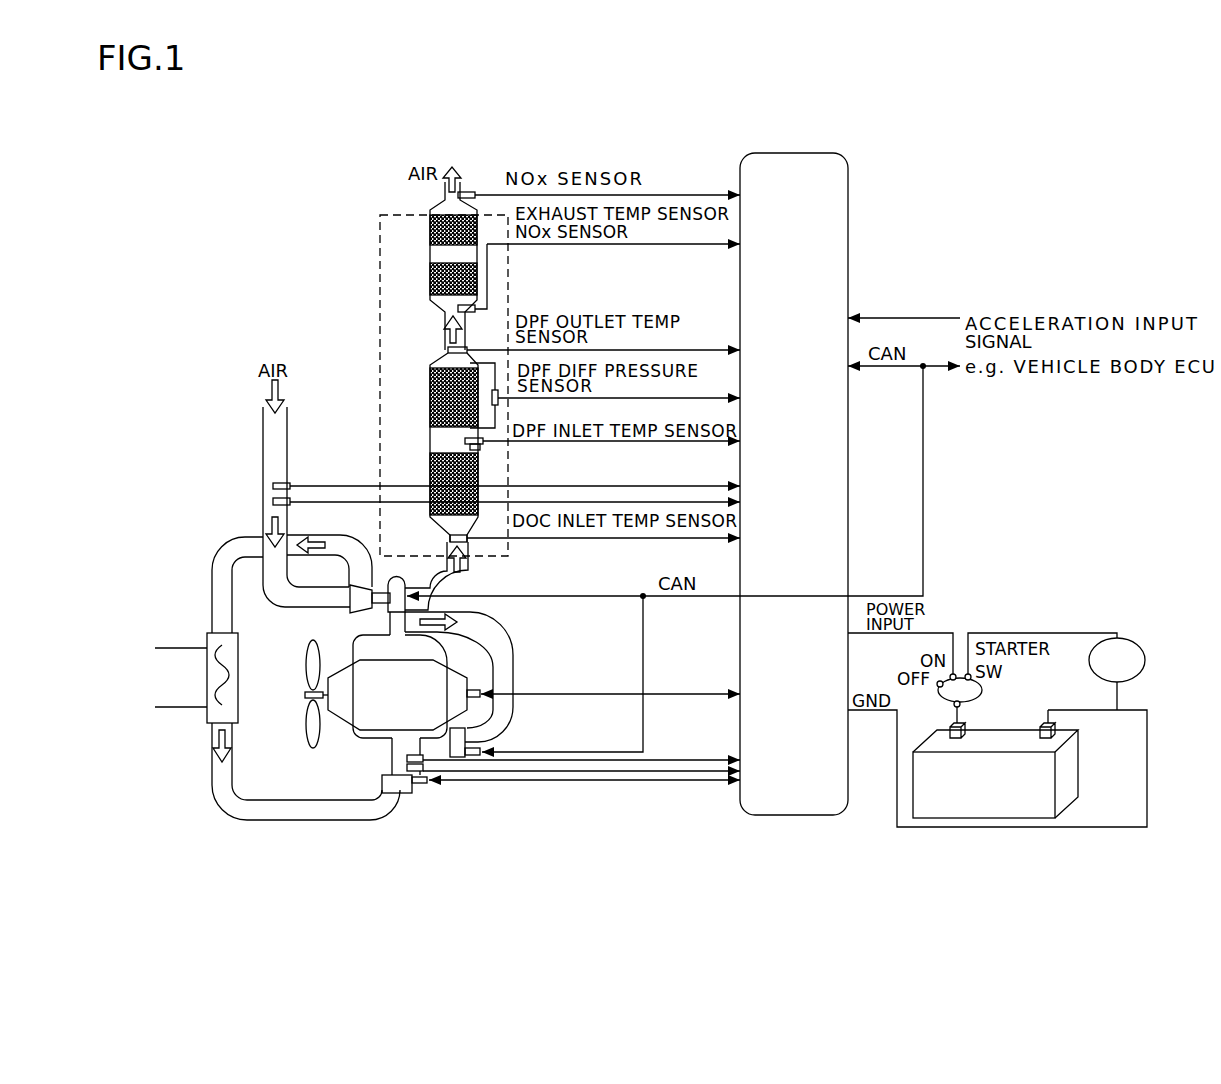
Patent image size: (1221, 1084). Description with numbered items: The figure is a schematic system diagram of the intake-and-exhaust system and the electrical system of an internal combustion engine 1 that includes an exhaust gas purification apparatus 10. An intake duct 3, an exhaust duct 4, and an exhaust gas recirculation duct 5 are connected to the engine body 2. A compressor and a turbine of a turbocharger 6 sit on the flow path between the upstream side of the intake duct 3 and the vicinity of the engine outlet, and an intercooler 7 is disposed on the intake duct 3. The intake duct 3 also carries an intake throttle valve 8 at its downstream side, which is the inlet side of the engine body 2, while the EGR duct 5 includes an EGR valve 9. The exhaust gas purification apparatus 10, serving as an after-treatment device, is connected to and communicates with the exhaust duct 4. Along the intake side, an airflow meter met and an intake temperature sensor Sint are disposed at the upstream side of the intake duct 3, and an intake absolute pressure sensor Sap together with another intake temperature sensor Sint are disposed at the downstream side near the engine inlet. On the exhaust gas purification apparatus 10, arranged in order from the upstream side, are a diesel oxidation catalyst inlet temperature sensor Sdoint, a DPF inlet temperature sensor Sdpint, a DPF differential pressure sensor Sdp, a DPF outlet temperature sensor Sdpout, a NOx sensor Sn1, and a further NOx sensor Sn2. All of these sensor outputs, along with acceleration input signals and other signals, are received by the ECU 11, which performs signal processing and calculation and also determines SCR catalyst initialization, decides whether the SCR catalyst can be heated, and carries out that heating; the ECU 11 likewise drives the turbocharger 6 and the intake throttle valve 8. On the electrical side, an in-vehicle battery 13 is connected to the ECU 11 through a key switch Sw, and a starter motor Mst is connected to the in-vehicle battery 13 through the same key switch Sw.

The internal combustion engine 1 is at (559, 863).
The engine body 2 is at (345, 690).
The intake duct 3 is at (295, 820).
The exhaust duct 4 is at (452, 578).
The exhaust gas recirculation (EGR) duct 5 is at (515, 667).
The turbocharger 6 is at (377, 620).
The intercooler 7 is at (240, 677).
The intake throttle valve 8 is at (405, 795).
The EGR valve 9 is at (470, 732).
The exhaust gas purification apparatus 10 is at (380, 262).
The ECU 11 is at (848, 492).
The in-vehicle battery 13 is at (990, 812).
The NOx sensor Sn2 is at (467, 192).
The NOx sensor Sn1 is at (470, 305).
The DPF outlet temperature sensor Sdpout is at (463, 350).
The DPF differential pressure sensor Sdp is at (499, 400).
The DPF inlet temperature sensor Sdpint is at (484, 441).
The DOC inlet temperature sensor Sdoint is at (450, 539).
The airflow meter met is at (290, 485).
The intake temperature sensor Sint is at (290, 500).
The intake absolute pressure sensor Sap is at (383, 780).
The key switch Sw is at (960, 656).
The starter motor Mst is at (1135, 640).